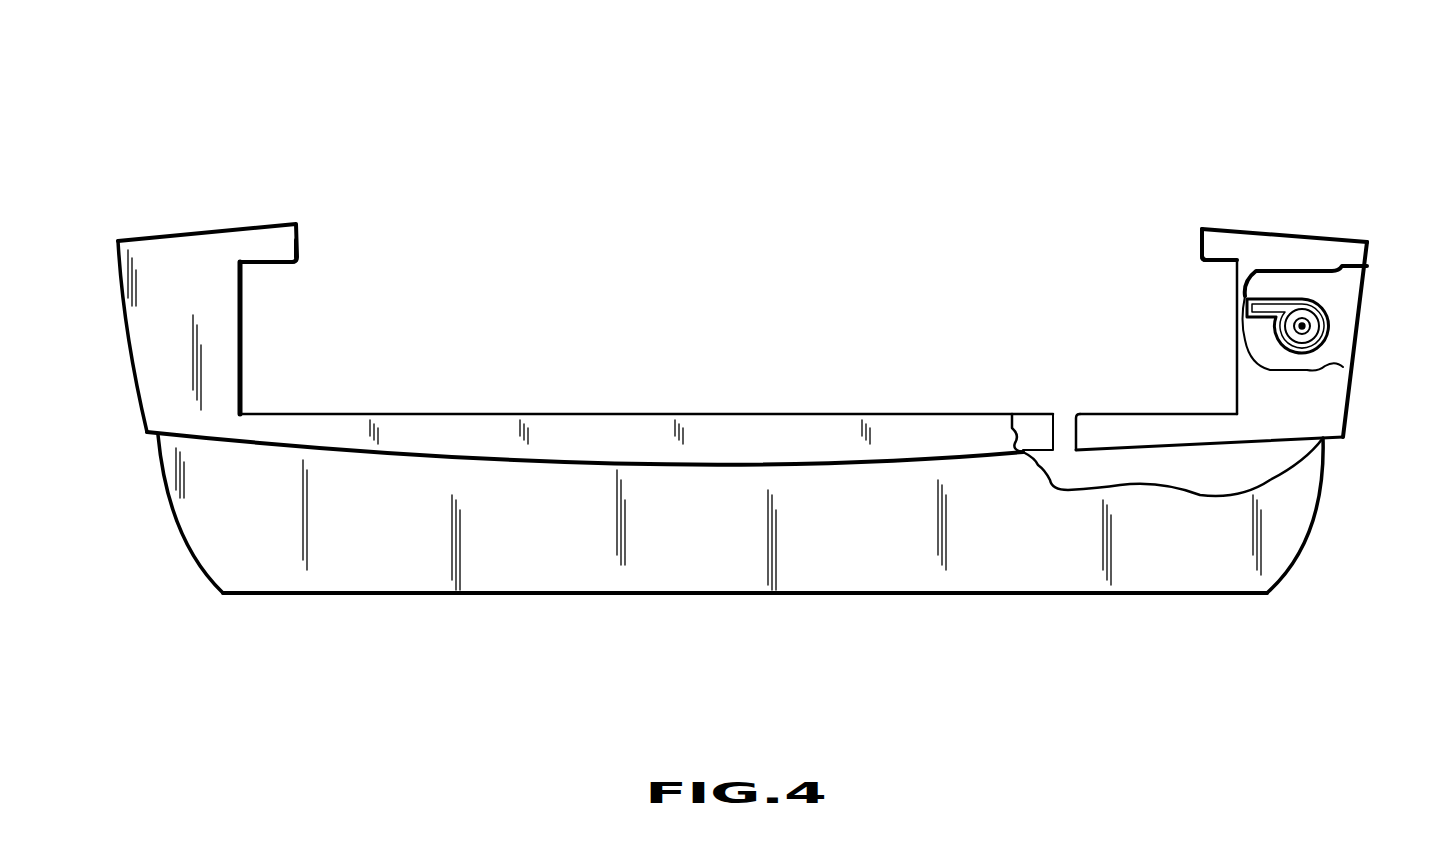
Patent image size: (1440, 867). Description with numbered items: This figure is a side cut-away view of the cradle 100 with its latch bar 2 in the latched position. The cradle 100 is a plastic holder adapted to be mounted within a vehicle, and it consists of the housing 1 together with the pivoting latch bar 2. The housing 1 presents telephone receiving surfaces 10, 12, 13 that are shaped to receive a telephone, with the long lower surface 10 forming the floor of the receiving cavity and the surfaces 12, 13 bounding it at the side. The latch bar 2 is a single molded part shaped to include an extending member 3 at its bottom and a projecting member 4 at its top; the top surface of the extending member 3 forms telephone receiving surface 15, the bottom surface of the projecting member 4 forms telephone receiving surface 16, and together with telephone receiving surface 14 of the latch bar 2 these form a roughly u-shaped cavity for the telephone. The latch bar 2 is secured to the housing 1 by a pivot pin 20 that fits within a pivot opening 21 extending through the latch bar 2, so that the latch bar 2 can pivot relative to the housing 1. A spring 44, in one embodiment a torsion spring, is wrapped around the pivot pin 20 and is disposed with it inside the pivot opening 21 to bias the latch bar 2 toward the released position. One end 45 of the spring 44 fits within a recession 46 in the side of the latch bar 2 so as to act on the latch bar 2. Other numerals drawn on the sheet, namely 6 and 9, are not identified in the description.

The cradle 100 is at (998, 103).
The housing 1 is at (895, 540).
The latch bar 2 is at (1306, 420).
The extending member 3 is at (1105, 430).
The projecting member 4 is at (1208, 228).
The left flange 6 is at (275, 245).
The right flange 9 is at (1246, 227).
The telephone receiving surface 10 is at (498, 410).
The telephone receiving surface 12 is at (272, 270).
The telephone receiving surface 13 is at (248, 348).
The telephone receiving surface 14 is at (1220, 315).
The telephone receiving surface 15 is at (1155, 408).
The telephone receiving surface 16 is at (1218, 272).
The pivot pin 20 is at (1302, 327).
The pivot opening 21 is at (1322, 295).
The spring 44 is at (1302, 344).
The end 45 is at (1265, 303).
The recession 46 is at (1252, 322).